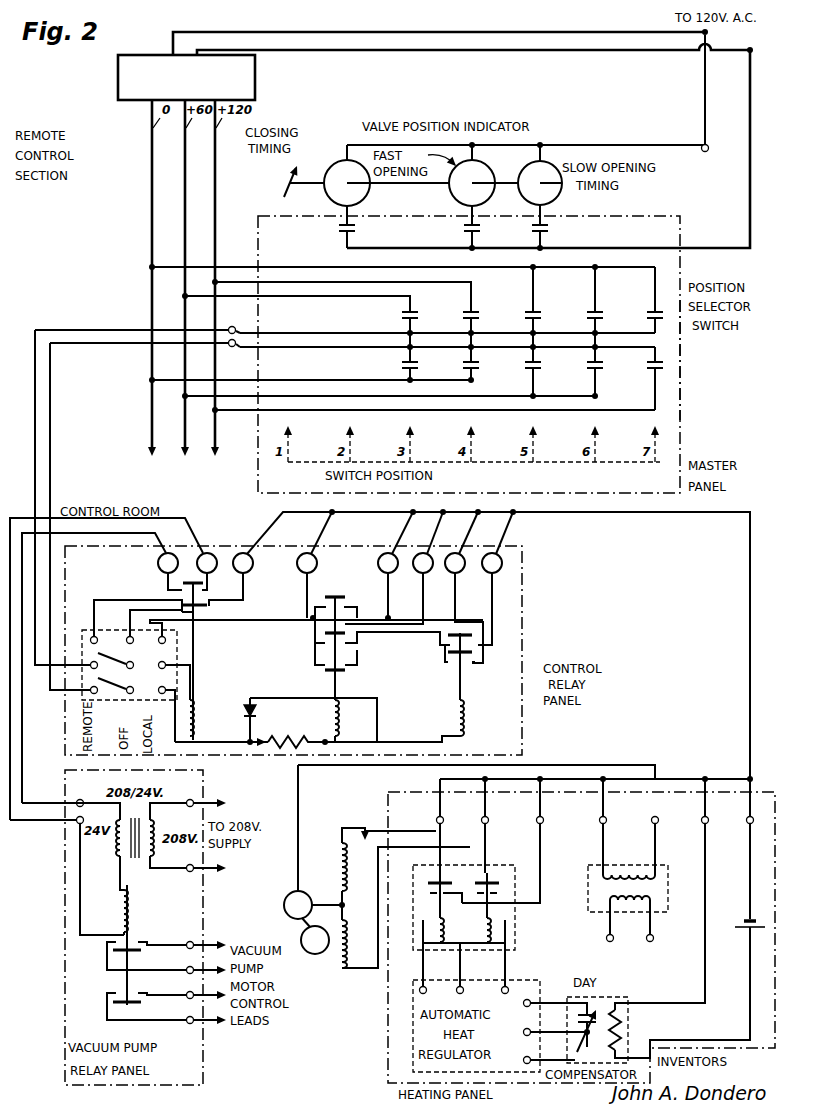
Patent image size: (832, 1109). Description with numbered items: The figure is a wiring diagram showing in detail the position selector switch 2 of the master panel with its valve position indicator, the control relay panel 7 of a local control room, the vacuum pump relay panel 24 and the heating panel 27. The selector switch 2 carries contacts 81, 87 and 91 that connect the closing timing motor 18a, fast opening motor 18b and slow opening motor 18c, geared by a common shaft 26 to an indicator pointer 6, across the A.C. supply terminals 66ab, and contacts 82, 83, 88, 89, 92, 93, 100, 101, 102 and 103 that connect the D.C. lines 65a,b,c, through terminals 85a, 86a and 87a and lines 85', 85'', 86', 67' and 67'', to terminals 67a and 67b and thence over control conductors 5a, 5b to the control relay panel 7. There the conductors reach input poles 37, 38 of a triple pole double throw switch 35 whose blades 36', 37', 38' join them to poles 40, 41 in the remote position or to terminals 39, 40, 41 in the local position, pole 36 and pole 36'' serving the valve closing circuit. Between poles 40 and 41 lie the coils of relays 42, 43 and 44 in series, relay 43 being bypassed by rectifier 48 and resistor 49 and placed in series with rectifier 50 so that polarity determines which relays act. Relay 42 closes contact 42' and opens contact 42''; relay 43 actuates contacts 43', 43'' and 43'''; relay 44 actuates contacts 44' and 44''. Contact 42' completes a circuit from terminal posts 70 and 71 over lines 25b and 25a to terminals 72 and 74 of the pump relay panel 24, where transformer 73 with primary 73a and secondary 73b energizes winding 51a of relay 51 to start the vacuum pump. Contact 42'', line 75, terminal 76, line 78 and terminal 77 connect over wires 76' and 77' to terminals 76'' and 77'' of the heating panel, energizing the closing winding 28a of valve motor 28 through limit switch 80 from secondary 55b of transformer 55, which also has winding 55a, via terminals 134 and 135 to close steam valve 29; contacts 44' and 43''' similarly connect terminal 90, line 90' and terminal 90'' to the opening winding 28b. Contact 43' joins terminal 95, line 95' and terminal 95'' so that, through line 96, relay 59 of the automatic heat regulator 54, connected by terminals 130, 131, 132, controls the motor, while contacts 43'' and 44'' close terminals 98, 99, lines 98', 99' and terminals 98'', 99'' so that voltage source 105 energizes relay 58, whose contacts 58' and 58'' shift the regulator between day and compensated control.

The multiple position selector switch 2 is at (682, 413).
The control conductor 5a is at (34, 418).
The control conductor 5b is at (52, 436).
The valve position indicator needle 6 is at (289, 183).
The control relay panel 7 is at (524, 629).
The closing timing motor 18a is at (346, 160).
The fast opening motor 18b is at (482, 160).
The slow opening motor 18c is at (540, 183).
The pump relay panel 24 is at (64, 970).
The line 25a is at (10, 822).
The line 25b is at (36, 798).
The common shaft 26 is at (412, 186).
The heating panel 27 is at (387, 1075).
The valve motor 28 is at (288, 896).
The closing winding 28a is at (336, 852).
The opening winding 28b is at (362, 975).
The steam valve 29 is at (310, 955).
The triple pole double throw switch 35 is at (82, 632).
The switch pole 36 is at (62, 663).
The switch blade 36' is at (114, 621).
The switch pole 36'' is at (136, 650).
The input pole 37 is at (62, 688).
The switch blade 37' is at (132, 675).
The input pole 38 is at (64, 713).
The switch blade 38' is at (115, 709).
The terminal 39 is at (160, 637).
The pole 40 is at (167, 662).
The pole 41 is at (168, 688).
The relay 42 is at (211, 661).
The relay contact 42' is at (163, 580).
The relay contact 42'' is at (230, 592).
The relay 43 is at (351, 669).
The relay contact 43' is at (340, 599).
The relay contact 43'' is at (382, 641).
The relay contact 43''' is at (364, 665).
The relay 44 is at (480, 684).
The relay contact 44' is at (471, 666).
The relay contact 44'' is at (483, 622).
The rectifier 48 is at (256, 740).
The resistor 49 is at (288, 738).
The rectifier 50 is at (248, 710).
The relay 51 is at (106, 895).
The relay winding 51a is at (120, 912).
The automatic heat regulator 54 is at (412, 1043).
The transformer 55 is at (588, 877).
The thermostat coil 55a is at (612, 906).
The secondary winding 55b is at (629, 860).
The relay 58 is at (633, 1012).
The relay contact 58' is at (560, 1024).
The relay contact 58'' is at (562, 1035).
The relay 59 is at (492, 866).
The D.C. voltage lines 65a,b,c is at (103, 230).
The A.C. supply lines 66ab is at (724, 99).
The output terminal 67a is at (258, 333).
The line 67' is at (331, 322).
The line 67'' is at (301, 357).
The input terminal 67b is at (235, 357).
The terminal post 70 is at (157, 563).
The terminal post 71 is at (212, 552).
The input terminal 72 is at (84, 800).
The power transformer 73 is at (170, 800).
The primary winding 73a is at (158, 828).
The secondary winding 73b is at (112, 850).
The input terminal 74 is at (78, 826).
The line 75 is at (110, 600).
The terminal 76 is at (255, 551).
The wire 76' is at (493, 642).
The terminal 76'' is at (453, 838).
The output terminal post 77 is at (388, 585).
The line 77' is at (507, 644).
The terminal 77'' is at (616, 844).
The line 78 is at (258, 620).
The limit switch 80 is at (352, 816).
The contact 81 is at (356, 228).
The contact 82 is at (419, 315).
The contact 83 is at (419, 365).
The line 85' is at (290, 248).
The line 85'' is at (348, 368).
The input terminal 85a is at (150, 380).
The line 86' is at (233, 318).
The input terminal 86a is at (184, 396).
The contact 87 is at (481, 228).
The terminal 87a is at (224, 424).
The contact 88 is at (480, 315).
The contact 89 is at (480, 365).
The terminal 90 is at (307, 585).
The line 90' is at (435, 644).
The terminal 90'' is at (500, 838).
The contact 91 is at (549, 228).
The contact 92 is at (542, 315).
The contact 93 is at (542, 365).
The terminal 95 is at (389, 588).
The line 95' is at (427, 531).
The terminal 95'' is at (516, 853).
The line 96 is at (543, 847).
The terminal 98 is at (464, 608).
The line 98' is at (586, 643).
The output terminal 98'' is at (674, 911).
The terminal 99 is at (490, 599).
The line 99' is at (639, 644).
The output terminal 99'' is at (763, 866).
The capacitor 100 is at (608, 315).
The capacitor 101 is at (608, 365).
The contact 102 is at (657, 311).
The contact 103 is at (668, 371).
The voltage source 105 is at (742, 922).
The terminal 130 is at (433, 974).
The terminal 131 is at (472, 974).
The terminal 132 is at (510, 974).
The terminal 134 is at (343, 903).
The terminal 135 is at (669, 844).